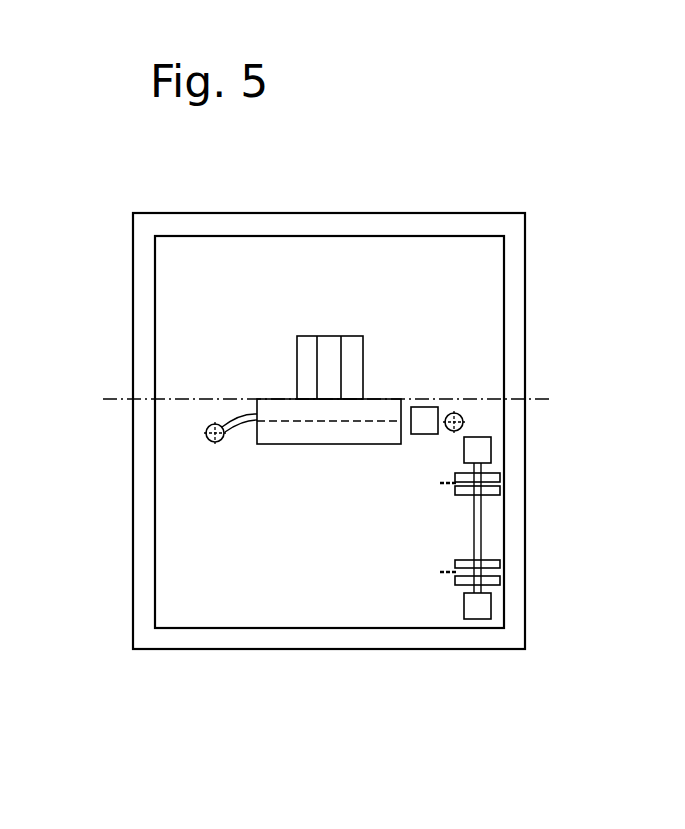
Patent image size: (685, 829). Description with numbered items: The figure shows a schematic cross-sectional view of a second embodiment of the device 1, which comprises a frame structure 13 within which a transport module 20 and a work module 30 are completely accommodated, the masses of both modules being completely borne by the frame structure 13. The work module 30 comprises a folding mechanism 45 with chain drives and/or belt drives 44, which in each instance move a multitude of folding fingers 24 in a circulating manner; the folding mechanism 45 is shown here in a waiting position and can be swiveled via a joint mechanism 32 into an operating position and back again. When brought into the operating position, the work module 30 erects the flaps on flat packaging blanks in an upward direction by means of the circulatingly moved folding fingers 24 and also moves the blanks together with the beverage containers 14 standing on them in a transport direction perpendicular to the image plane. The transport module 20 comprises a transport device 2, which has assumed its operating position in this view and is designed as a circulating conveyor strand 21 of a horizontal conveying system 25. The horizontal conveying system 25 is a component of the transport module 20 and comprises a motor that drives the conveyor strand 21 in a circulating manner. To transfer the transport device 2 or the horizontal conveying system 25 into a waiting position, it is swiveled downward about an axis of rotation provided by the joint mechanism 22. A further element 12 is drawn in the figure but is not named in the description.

The device 1 is at (278, 758).
The transport device 2 is at (329, 473).
The pump unit 12 is at (283, 333).
The frame structure 13 is at (474, 223).
The beverage containers 14 is at (331, 352).
The transport module 20 is at (208, 496).
The conveyor strand 21 is at (290, 442).
The joint mechanism 22 is at (206, 436).
The folding fingers 24 is at (447, 573).
The horizontal conveying system 25 is at (384, 387).
The work module 30 is at (0, 215).
The joint mechanism 32 is at (463, 424).
The chain drives and/or belt drives 44 is at (492, 490).
The folding mechanism 45 is at (431, 494).